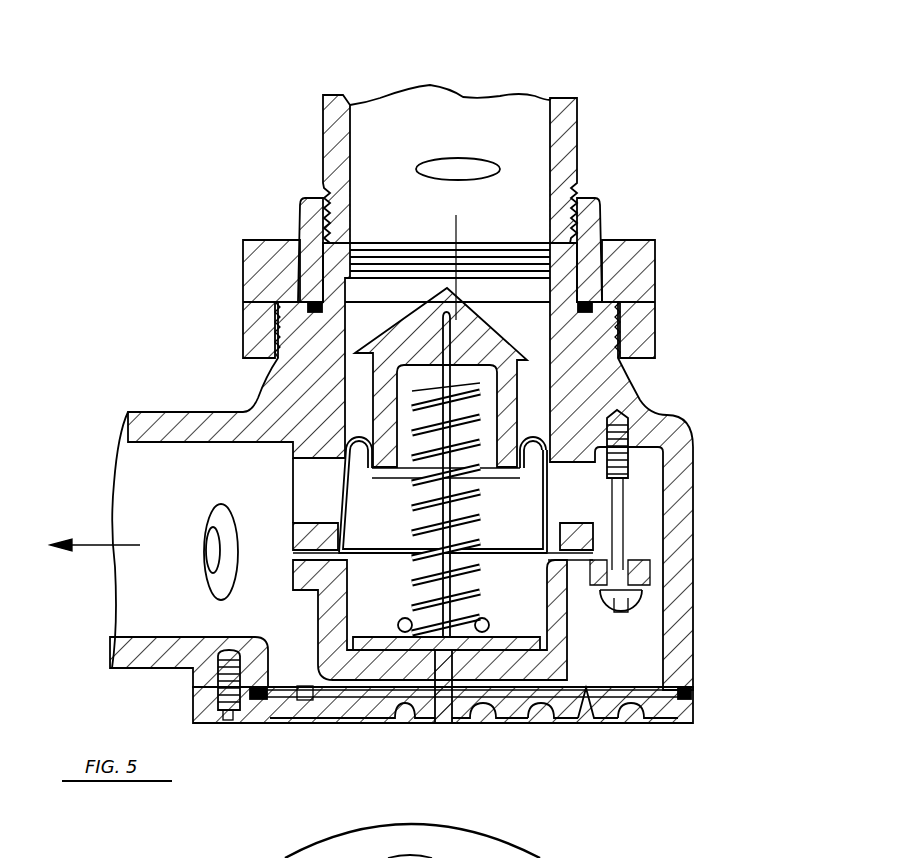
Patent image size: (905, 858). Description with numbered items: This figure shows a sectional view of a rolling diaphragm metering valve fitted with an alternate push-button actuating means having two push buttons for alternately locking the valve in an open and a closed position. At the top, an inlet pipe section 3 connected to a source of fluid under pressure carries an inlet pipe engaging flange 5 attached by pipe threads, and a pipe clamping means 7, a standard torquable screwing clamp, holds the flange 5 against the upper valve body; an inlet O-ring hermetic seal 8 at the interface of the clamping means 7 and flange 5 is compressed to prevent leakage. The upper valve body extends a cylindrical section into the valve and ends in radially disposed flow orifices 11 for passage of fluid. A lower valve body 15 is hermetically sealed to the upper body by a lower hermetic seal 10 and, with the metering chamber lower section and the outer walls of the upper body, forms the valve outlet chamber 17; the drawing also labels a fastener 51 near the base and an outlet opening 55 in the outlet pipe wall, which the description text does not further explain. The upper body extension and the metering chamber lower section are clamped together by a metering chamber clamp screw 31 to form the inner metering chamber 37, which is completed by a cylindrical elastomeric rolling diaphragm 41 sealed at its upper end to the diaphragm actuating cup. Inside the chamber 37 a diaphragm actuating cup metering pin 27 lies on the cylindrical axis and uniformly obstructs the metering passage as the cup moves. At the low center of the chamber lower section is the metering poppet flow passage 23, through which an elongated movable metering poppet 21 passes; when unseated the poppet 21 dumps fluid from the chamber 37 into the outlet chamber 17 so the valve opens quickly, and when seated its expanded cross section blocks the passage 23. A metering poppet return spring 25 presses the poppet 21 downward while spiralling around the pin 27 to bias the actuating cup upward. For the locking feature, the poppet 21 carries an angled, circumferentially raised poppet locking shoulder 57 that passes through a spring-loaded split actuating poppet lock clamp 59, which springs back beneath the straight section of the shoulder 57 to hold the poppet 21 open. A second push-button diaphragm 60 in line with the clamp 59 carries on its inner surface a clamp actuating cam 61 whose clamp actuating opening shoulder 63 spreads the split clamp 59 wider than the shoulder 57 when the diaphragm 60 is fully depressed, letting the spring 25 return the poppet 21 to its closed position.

The inlet pipe section 3 is at (456, 160).
The inlet pipe engaging flange 5 is at (308, 212).
The pipe clamping means 7 is at (247, 285).
The inlet O-ring hermetic seal 8 is at (310, 308).
The lower hermetic seal 10 is at (692, 698).
The flow orifices 11 is at (578, 492).
The lower valve body 15 is at (695, 722).
The valve outlet chamber 17 is at (200, 528).
The metering poppet 21 is at (475, 624).
The metering poppet flow passage 23 is at (408, 647).
The metering poppet return spring 25 is at (415, 527).
The diaphragm actuating cup metering pin 27 is at (462, 540).
The metering chamber clamp screw 31 is at (635, 600).
The inner metering chamber 37 is at (552, 658).
The rolling diaphragm 41 is at (343, 500).
The bolt 51 is at (228, 723).
The outlet opening 55 is at (205, 528).
The poppet locking shoulder 57 is at (400, 718).
The actuating poppet lock clamp 59 is at (342, 718).
The second push-button diaphragm 60 is at (302, 705).
The clamp actuating cam 61 is at (586, 716).
The clamp actuating opening shoulder 63 is at (634, 712).